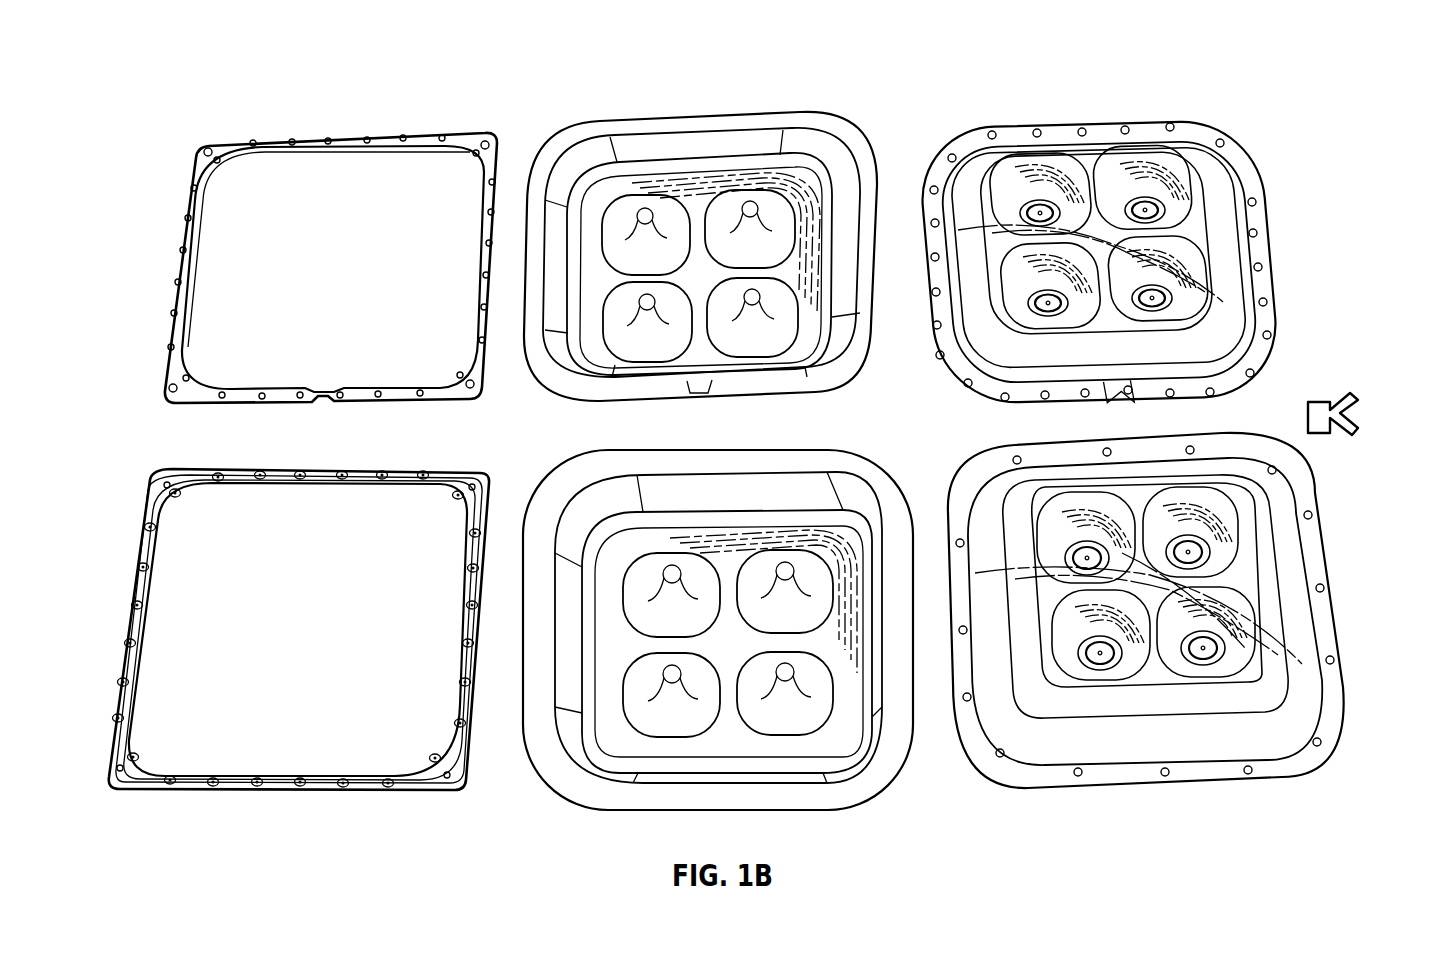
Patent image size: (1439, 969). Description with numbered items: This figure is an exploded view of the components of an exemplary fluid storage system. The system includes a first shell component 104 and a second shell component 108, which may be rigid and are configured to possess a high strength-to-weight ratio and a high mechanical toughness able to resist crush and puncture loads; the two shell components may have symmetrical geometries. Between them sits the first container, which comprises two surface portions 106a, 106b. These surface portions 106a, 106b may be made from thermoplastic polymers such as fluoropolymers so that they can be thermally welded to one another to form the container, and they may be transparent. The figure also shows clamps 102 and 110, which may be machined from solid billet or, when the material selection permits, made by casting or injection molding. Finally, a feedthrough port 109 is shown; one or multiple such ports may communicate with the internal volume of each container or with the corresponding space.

The clamp 102 is at (186, 240).
The first shell component 104 is at (768, 196).
The surface portion 106a is at (780, 566).
The surface portion 106b is at (1228, 634).
The second shell component 108 is at (1122, 177).
The feedthrough port 109 is at (1318, 405).
The clamp 110 is at (132, 614).